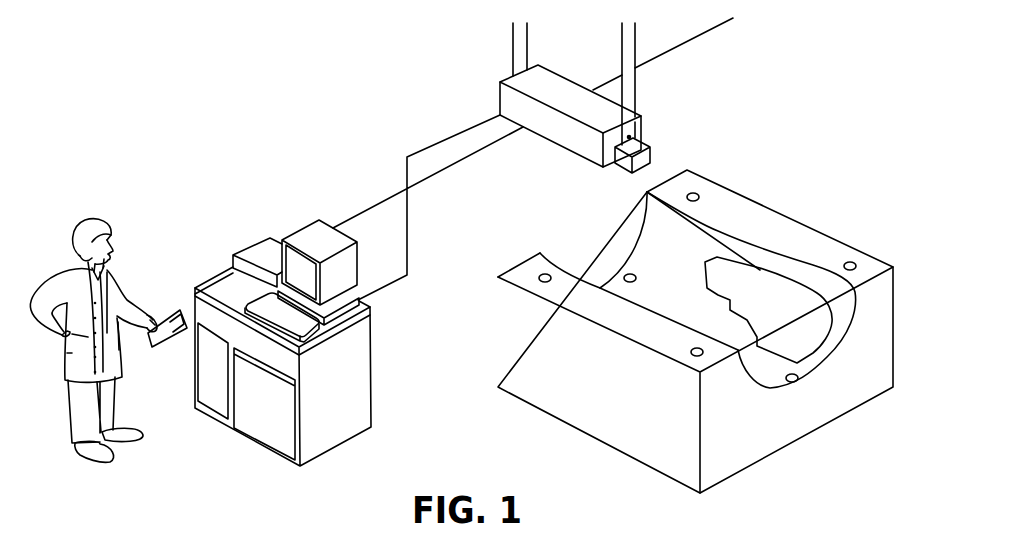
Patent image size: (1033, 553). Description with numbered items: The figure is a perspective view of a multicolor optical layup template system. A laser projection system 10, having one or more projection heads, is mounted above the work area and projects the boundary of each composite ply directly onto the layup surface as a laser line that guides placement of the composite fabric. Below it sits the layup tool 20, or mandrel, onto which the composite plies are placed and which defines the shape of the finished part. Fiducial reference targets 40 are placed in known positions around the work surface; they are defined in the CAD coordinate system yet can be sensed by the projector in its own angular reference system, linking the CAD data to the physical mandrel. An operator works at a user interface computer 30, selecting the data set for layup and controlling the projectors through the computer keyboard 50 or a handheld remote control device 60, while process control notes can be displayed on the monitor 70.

The laser projection system 10 is at (557, 85).
The layup tool 20 is at (634, 408).
The user interface computer 30 is at (282, 418).
The fiducial reference targets 40 is at (628, 274).
The computer keyboard 50 is at (268, 307).
The remote control device 60 is at (173, 322).
The monitor 70 is at (313, 235).